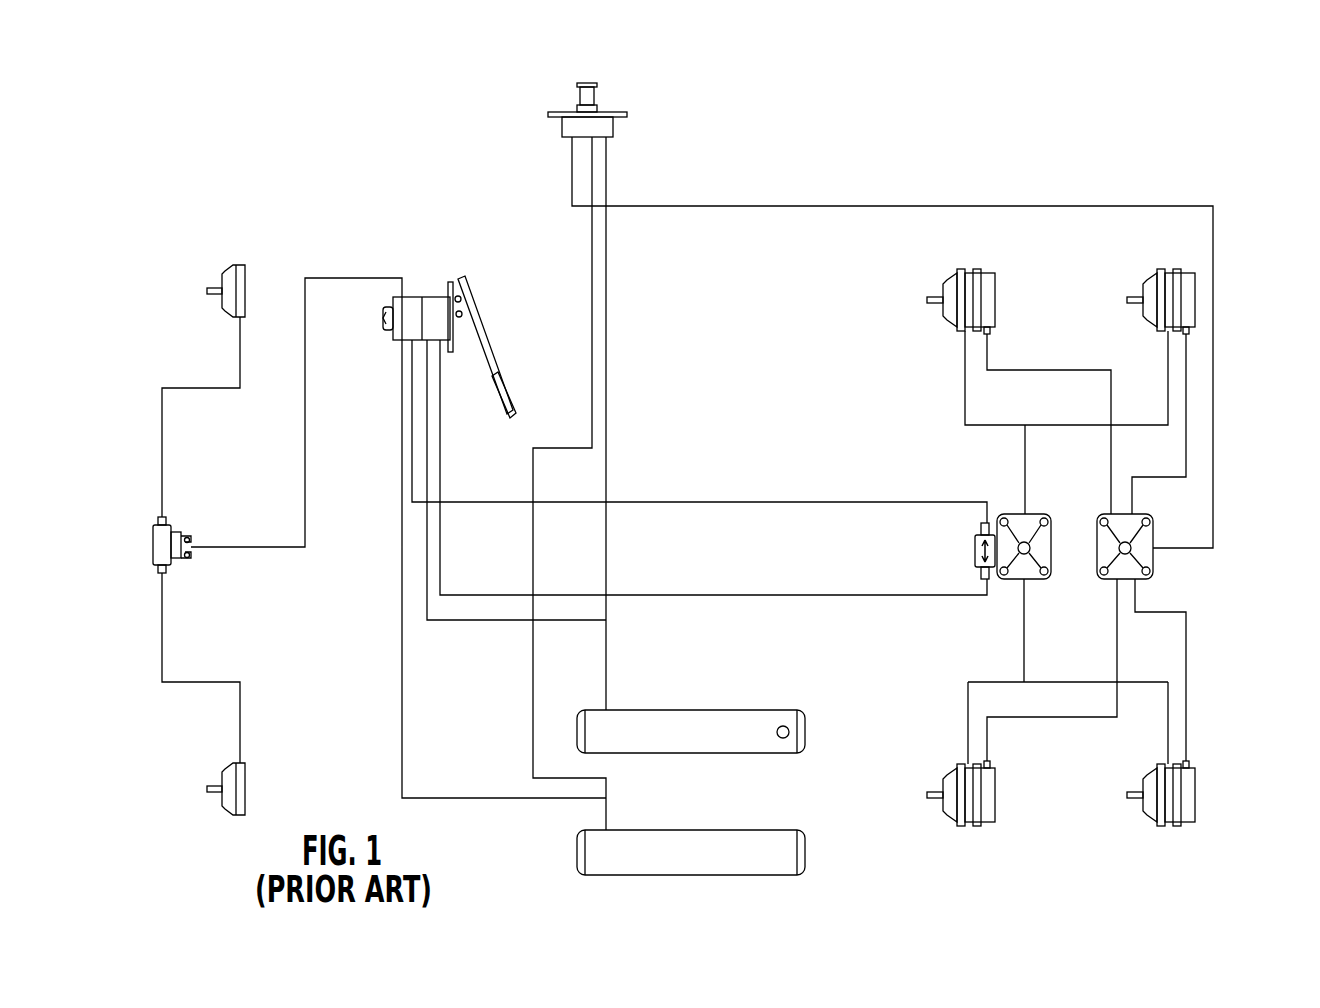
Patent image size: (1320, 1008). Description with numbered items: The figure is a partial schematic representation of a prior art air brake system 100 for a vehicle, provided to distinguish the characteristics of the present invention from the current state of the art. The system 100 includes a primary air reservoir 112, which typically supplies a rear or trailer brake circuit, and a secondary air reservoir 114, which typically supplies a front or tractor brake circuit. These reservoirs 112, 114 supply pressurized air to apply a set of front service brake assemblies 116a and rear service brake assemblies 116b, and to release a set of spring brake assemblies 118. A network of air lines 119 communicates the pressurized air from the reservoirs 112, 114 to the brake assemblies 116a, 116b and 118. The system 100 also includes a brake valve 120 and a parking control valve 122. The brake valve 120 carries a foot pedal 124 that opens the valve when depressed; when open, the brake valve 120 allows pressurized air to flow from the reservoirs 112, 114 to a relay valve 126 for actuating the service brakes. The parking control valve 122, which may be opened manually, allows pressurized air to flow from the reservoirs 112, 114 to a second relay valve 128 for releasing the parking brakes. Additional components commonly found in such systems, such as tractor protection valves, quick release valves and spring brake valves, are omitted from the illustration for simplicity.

The prior art air brake system 100 is at (268, 128).
The primary air reservoir 112 is at (691, 731).
The secondary air reservoir 114 is at (691, 852).
The front service brake assemblies 116a is at (236, 266).
The rear service brake assemblies 116b is at (945, 275).
The spring brake assemblies 118 is at (992, 293).
The air lines 119 is at (192, 388).
The brake valve 120 is at (397, 333).
The parking control valve 122 is at (627, 113).
The foot pedal 124 is at (505, 422).
The relay valve 126 is at (1025, 523).
The relay valve 128 is at (1132, 527).